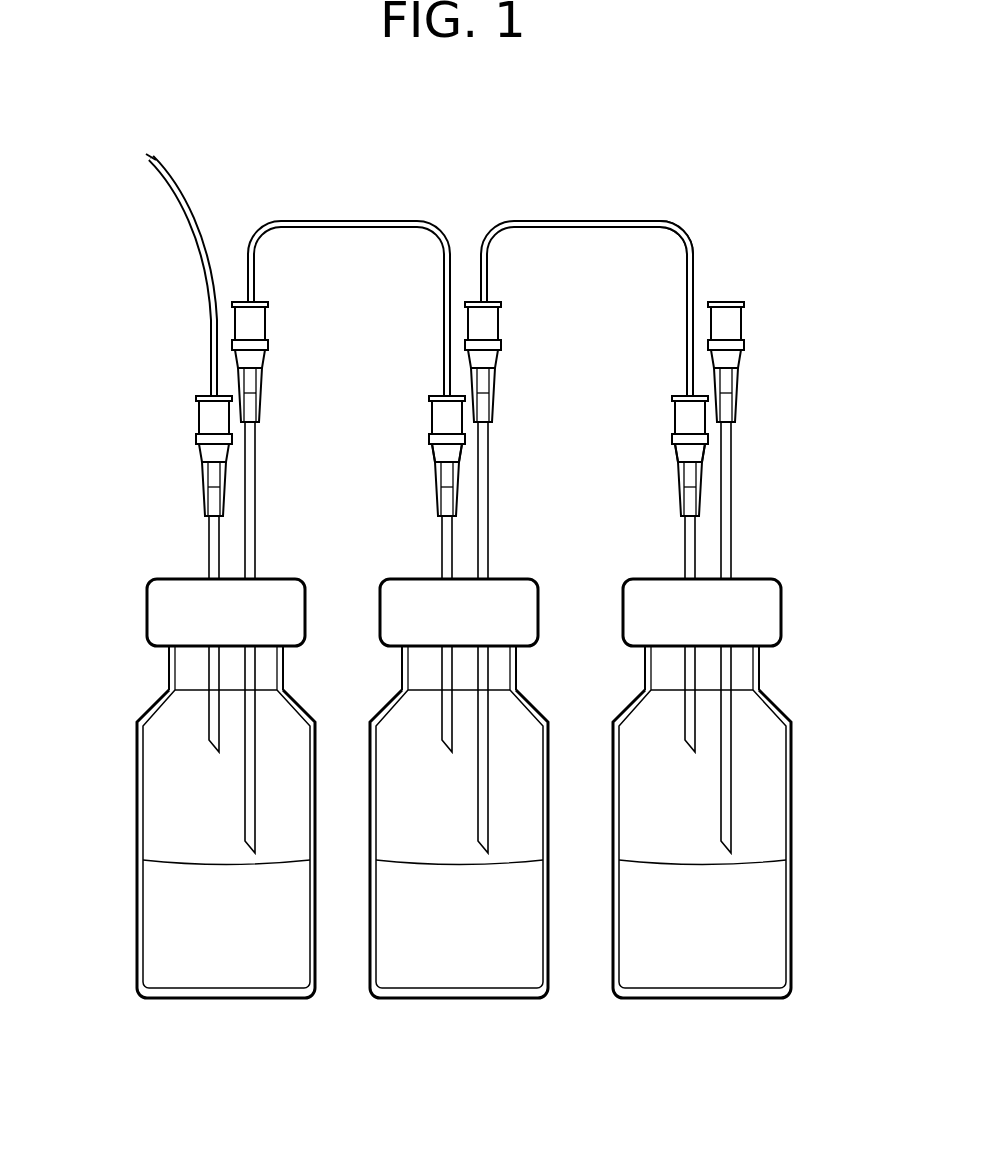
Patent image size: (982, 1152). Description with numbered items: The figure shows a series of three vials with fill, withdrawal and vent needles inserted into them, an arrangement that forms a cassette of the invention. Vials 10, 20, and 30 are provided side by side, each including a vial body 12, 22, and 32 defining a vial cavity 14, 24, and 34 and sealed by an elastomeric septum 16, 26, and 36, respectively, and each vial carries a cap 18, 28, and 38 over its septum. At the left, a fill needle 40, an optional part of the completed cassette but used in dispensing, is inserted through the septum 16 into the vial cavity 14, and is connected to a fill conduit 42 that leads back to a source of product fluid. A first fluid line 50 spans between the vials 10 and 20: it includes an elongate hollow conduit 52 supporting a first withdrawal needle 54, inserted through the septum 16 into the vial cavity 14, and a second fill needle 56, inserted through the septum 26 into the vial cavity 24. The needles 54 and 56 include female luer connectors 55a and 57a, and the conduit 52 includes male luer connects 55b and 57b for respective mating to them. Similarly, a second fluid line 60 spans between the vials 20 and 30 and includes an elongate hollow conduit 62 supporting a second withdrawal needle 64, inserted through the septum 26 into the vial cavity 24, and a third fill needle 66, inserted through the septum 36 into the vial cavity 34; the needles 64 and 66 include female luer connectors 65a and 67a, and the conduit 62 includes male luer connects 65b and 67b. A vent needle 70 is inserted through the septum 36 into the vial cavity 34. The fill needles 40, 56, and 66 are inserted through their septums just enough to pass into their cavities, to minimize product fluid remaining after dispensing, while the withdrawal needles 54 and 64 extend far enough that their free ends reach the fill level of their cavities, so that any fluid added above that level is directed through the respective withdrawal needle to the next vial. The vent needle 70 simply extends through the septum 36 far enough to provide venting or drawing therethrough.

The vial 10 is at (136, 957).
The vial body 12 is at (140, 863).
The vial cavity 14 is at (155, 828).
The elastomeric septum 16 is at (183, 668).
The cap 18 is at (147, 612).
The vial 20 is at (440, 854).
The vial body 22 is at (432, 865).
The vial cavity 24 is at (435, 839).
The elastomeric septum 26 is at (427, 668).
The cap 28 is at (433, 612).
The vial 30 is at (684, 854).
The vial body 32 is at (673, 865).
The vial cavity 34 is at (676, 839).
The elastomeric septum 36 is at (669, 668).
The cap 38 is at (677, 612).
The fill needle 40 is at (205, 520).
The fill conduit 42 is at (210, 295).
The first fluid line 50 is at (344, 269).
The elongate hollow conduit 52 is at (290, 221).
The first withdrawal needle 54 is at (260, 525).
The female luer connector 55a is at (265, 354).
The male luer connect 55b is at (265, 322).
The second fill needle 56 is at (426, 574).
The female luer connector 57a is at (411, 455).
The male luer connect 57b is at (415, 415).
The second fluid line 60 is at (587, 269).
The elongate hollow conduit 62 is at (632, 279).
The second withdrawal needle 64 is at (508, 637).
The female luer connector 65a is at (510, 381).
The male luer connect 65b is at (521, 322).
The third fill needle 66 is at (670, 574).
The female luer connector 67a is at (658, 455).
The male luer connect 67b is at (655, 415).
The vent needle 70 is at (744, 577).